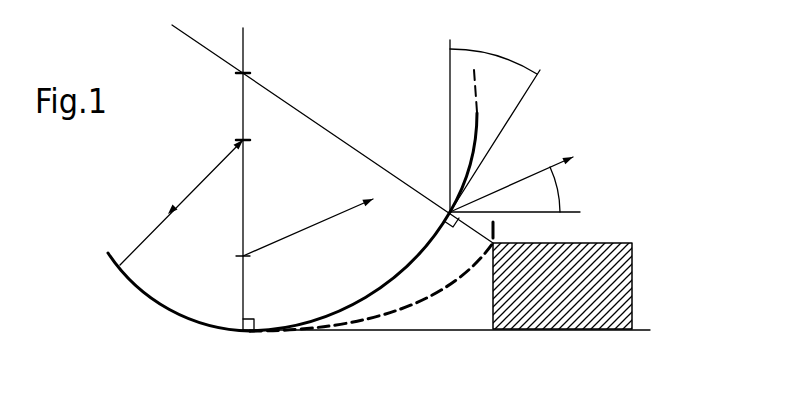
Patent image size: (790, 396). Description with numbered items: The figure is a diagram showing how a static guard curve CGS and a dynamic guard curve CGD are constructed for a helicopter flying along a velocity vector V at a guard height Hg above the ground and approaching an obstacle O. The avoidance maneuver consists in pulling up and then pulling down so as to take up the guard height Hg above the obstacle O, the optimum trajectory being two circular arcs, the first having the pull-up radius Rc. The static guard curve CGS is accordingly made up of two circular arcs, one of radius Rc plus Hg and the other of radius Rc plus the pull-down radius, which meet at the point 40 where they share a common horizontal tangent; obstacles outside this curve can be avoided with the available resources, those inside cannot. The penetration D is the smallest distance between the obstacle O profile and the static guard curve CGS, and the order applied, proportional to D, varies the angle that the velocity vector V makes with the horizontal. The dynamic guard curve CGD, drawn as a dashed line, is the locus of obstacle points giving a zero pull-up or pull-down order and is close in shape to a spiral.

The meeting point 40 is at (243, 333).
The guard height Hg is at (129, 252).
The pull-up radius of curvature Rc is at (196, 186).
The velocity vector V is at (302, 228).
The penetration D is at (471, 228).
The static guard curve CGS is at (477, 118).
The dynamic guard curve CGD is at (422, 305).
The obstacle O is at (623, 277).